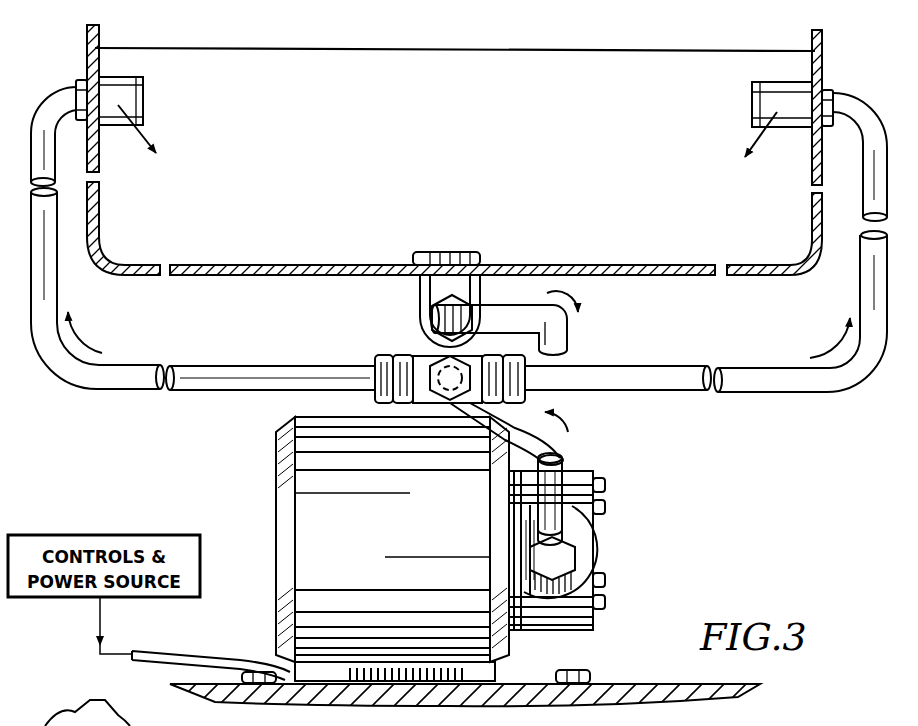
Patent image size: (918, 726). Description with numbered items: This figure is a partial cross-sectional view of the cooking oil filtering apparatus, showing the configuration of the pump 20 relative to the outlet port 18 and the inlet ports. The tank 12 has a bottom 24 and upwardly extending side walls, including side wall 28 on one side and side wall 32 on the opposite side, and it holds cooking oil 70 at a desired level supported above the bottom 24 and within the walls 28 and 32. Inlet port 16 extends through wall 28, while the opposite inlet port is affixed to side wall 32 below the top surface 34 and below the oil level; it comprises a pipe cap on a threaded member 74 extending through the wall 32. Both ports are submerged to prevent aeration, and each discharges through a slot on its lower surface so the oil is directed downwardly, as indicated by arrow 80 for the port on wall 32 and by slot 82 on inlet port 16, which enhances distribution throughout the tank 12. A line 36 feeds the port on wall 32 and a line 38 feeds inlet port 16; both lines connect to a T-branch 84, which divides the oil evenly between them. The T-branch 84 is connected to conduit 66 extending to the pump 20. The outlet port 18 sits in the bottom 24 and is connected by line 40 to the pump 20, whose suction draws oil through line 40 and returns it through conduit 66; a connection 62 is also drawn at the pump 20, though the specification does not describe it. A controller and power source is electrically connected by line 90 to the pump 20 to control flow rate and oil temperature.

The tank 12 is at (561, 252).
The inlet port 16 is at (143, 83).
The outlet port 18 is at (420, 300).
The pump 20 is at (593, 472).
The bottom 24 is at (640, 275).
The side wall 28 is at (87, 50).
The side wall 32 is at (822, 186).
The top surface 34 is at (825, 45).
The line 36 is at (835, 388).
The line 38 is at (280, 366).
The line 40 is at (567, 336).
The pump outlet pipe 62 is at (578, 560).
The conduit 66 is at (573, 450).
The cooking oil 70 is at (617, 50).
The threaded member 74 is at (833, 88).
The arrow 80 is at (762, 140).
The slot 82 is at (143, 112).
The T-branch 84 is at (415, 356).
The line 90 is at (242, 627).